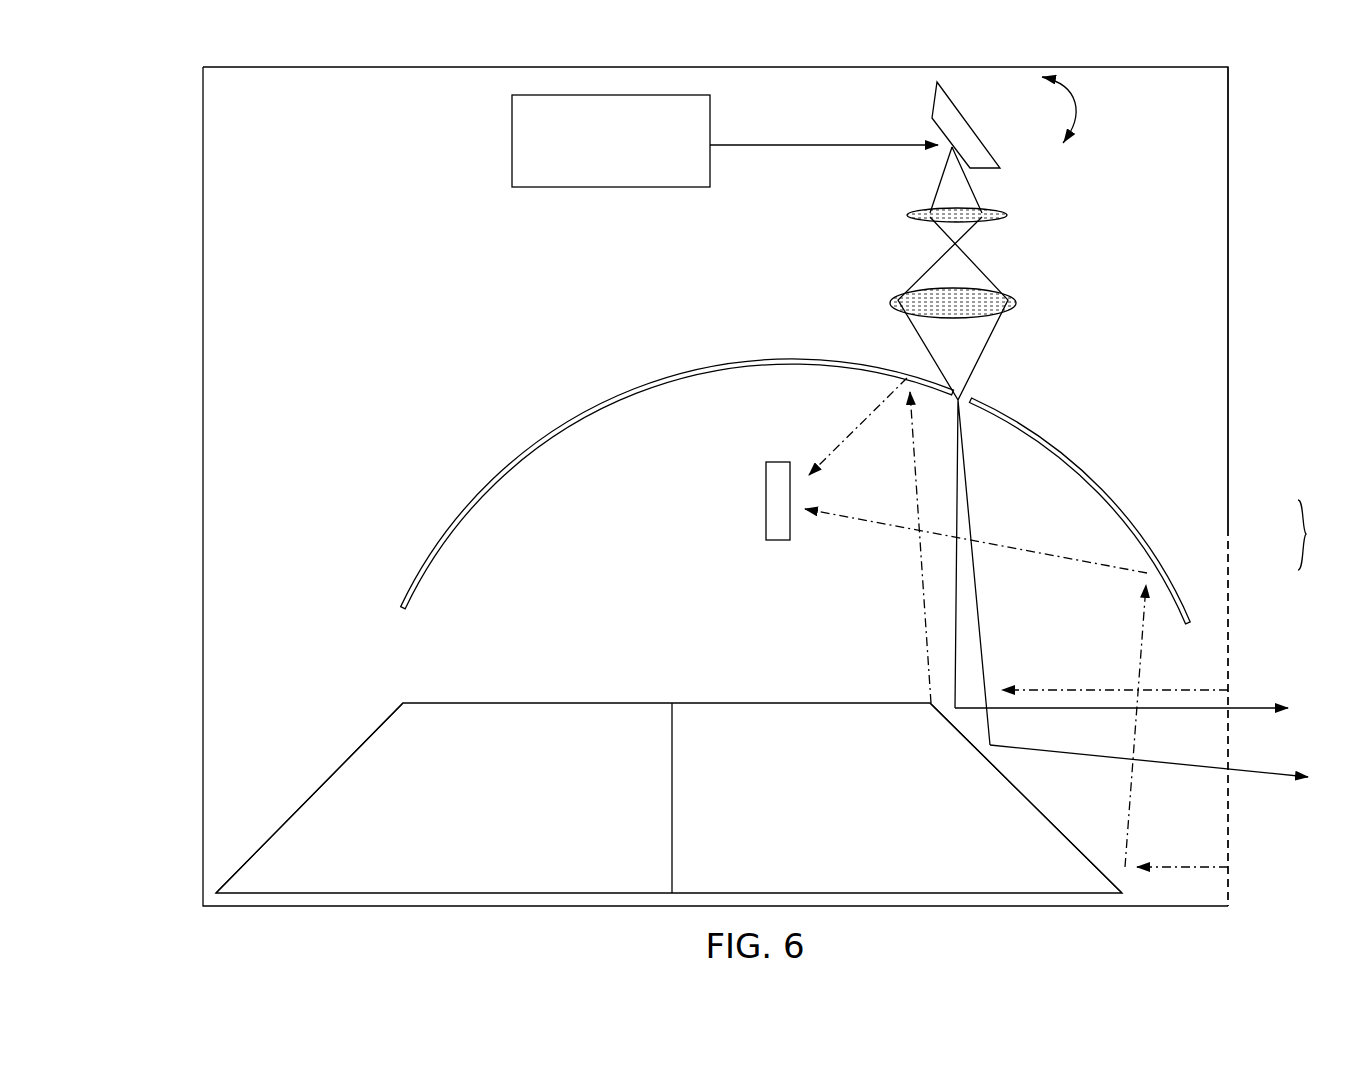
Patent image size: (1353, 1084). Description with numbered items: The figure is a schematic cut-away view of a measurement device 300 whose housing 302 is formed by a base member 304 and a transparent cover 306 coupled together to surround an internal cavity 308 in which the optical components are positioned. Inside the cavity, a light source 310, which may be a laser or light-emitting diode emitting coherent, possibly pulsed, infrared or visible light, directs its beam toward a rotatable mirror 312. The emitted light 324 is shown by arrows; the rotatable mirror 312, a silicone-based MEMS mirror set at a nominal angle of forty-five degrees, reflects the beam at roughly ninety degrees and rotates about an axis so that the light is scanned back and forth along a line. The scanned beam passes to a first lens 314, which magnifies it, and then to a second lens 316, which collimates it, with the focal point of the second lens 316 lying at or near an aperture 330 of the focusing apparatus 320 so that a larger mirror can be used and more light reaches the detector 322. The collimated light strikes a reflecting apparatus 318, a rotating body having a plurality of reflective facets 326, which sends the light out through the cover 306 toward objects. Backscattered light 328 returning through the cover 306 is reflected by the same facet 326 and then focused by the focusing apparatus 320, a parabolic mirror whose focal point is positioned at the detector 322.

The measurement device 300 is at (125, 115).
The housing 302 is at (1320, 535).
The base member 304 is at (1232, 526).
The transparent cover 306 is at (1234, 568).
The internal cavity 308 is at (270, 154).
The light source 310 is at (594, 155).
The rotatable mirror 312 is at (958, 120).
The first lens 314 is at (990, 215).
The second lens 316 is at (1012, 307).
The reflecting apparatus 318 is at (515, 702).
The focusing apparatus 320 is at (612, 412).
The detector 322 is at (777, 502).
The emitted light 324 is at (823, 143).
The facets 326 is at (322, 780).
The backscattered light 328 is at (840, 438).
The aperture 330 is at (972, 410).